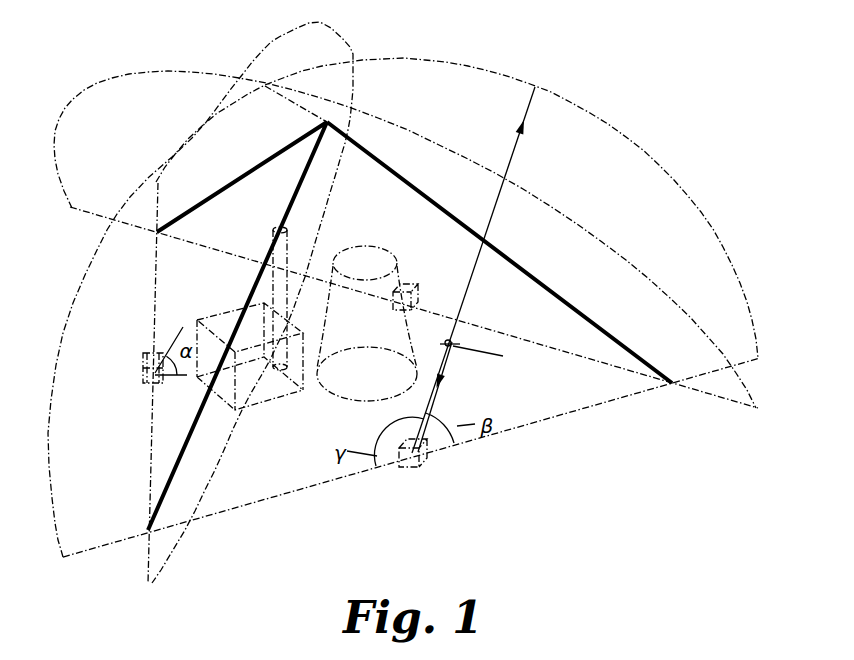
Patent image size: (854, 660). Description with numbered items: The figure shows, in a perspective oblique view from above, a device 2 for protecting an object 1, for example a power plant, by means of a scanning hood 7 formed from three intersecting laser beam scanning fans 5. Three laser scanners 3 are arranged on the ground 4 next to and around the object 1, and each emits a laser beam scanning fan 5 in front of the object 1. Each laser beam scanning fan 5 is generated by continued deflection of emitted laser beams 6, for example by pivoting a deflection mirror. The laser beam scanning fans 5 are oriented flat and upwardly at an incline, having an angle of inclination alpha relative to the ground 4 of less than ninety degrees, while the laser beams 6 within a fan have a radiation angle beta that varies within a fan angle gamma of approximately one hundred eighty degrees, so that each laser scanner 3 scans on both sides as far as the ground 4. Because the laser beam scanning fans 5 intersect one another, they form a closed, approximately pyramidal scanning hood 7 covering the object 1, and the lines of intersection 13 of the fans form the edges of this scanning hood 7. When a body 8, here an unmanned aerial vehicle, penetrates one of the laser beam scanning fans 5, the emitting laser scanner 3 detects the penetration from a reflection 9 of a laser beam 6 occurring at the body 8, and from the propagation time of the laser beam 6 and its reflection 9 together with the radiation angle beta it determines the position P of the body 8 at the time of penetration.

The object 1 is at (278, 429).
The device 2 is at (403, 294).
The laser scanner 3 is at (143, 375).
The ground 4 is at (591, 448).
The laser beam scanning fan 5 is at (153, 77).
The laser beam 6 is at (513, 157).
The scanning hood 7 is at (370, 221).
The body 8 is at (453, 337).
The reflection 9 is at (448, 374).
The line of intersection 13 is at (293, 144).